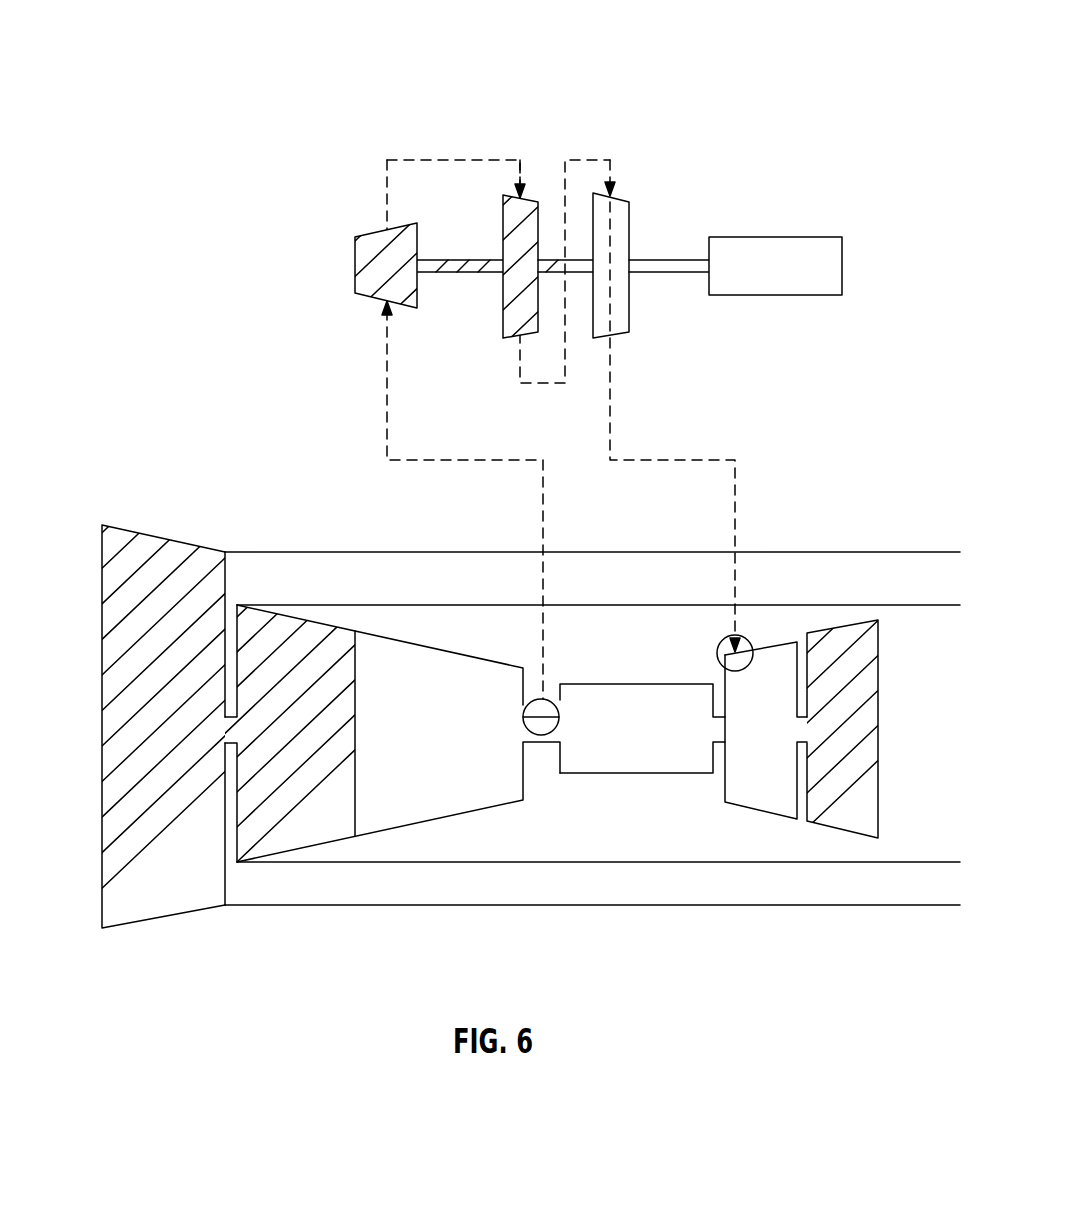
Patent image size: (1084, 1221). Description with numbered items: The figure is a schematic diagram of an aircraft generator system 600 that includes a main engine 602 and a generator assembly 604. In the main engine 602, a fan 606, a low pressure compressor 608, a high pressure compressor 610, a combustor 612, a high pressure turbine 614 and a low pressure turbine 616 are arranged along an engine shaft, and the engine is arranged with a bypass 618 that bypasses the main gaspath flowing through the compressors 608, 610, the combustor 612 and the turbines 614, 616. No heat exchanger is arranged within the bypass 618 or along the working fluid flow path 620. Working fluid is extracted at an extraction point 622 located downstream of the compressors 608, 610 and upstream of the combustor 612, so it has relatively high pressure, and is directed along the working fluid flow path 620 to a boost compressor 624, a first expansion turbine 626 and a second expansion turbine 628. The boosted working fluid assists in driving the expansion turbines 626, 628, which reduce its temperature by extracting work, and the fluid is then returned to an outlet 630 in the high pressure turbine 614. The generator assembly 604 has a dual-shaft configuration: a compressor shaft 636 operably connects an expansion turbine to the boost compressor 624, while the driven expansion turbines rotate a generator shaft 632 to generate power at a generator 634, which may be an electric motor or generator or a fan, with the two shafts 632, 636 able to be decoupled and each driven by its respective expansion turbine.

The aircraft generator system 600 is at (193, 79).
The main engine 602 is at (93, 742).
The generator assembly 604 is at (381, 152).
The fan 606 is at (130, 912).
The low pressure compressor 608 is at (268, 848).
The high pressure compressor 610 is at (376, 812).
The combustor 612 is at (595, 758).
The high pressure turbine 614 is at (750, 790).
The low pressure turbine 616 is at (840, 812).
The bypass 618 is at (900, 592).
The working fluid flow path 620 is at (383, 442).
The extraction point 622 is at (549, 700).
The boost compressor 624 is at (363, 254).
The first expansion turbine 626 is at (508, 212).
The second expansion turbine 628 is at (615, 227).
The outlet 630 is at (743, 633).
The generator shaft 632 is at (657, 266).
The generator 634 is at (832, 276).
The compressor shaft 636 is at (465, 265).